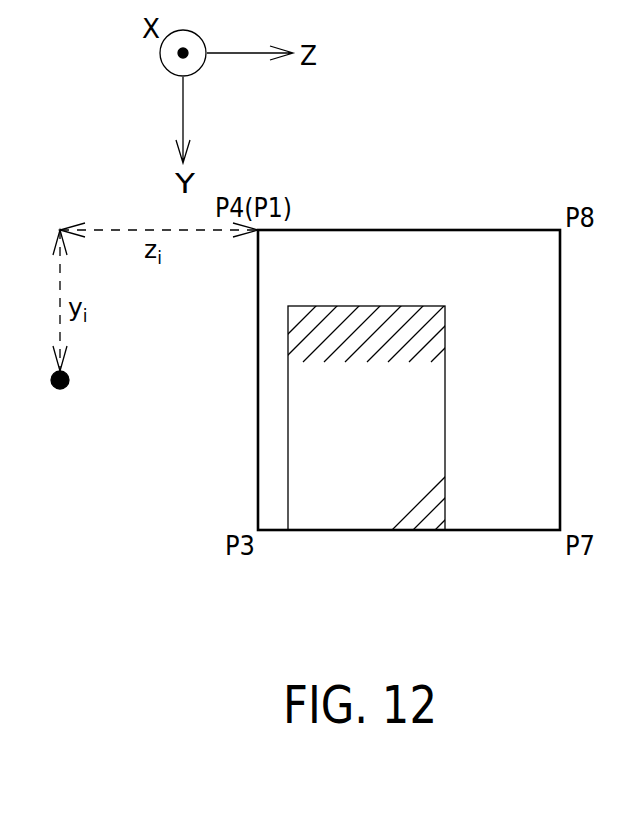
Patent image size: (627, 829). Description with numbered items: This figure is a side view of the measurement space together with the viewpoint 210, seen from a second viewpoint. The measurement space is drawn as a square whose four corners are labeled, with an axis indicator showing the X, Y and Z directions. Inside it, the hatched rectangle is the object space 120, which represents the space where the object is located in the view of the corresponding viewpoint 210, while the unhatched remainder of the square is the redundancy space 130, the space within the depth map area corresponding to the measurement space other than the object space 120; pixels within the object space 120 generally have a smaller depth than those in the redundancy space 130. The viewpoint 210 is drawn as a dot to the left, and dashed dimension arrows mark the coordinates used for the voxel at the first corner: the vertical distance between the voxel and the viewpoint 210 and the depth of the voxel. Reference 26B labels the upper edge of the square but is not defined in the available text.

The second surface (plane) 26B is at (485, 230).
The object space 120 is at (358, 473).
The redundancy space 130 is at (504, 495).
The viewpoint 210 is at (60, 389).